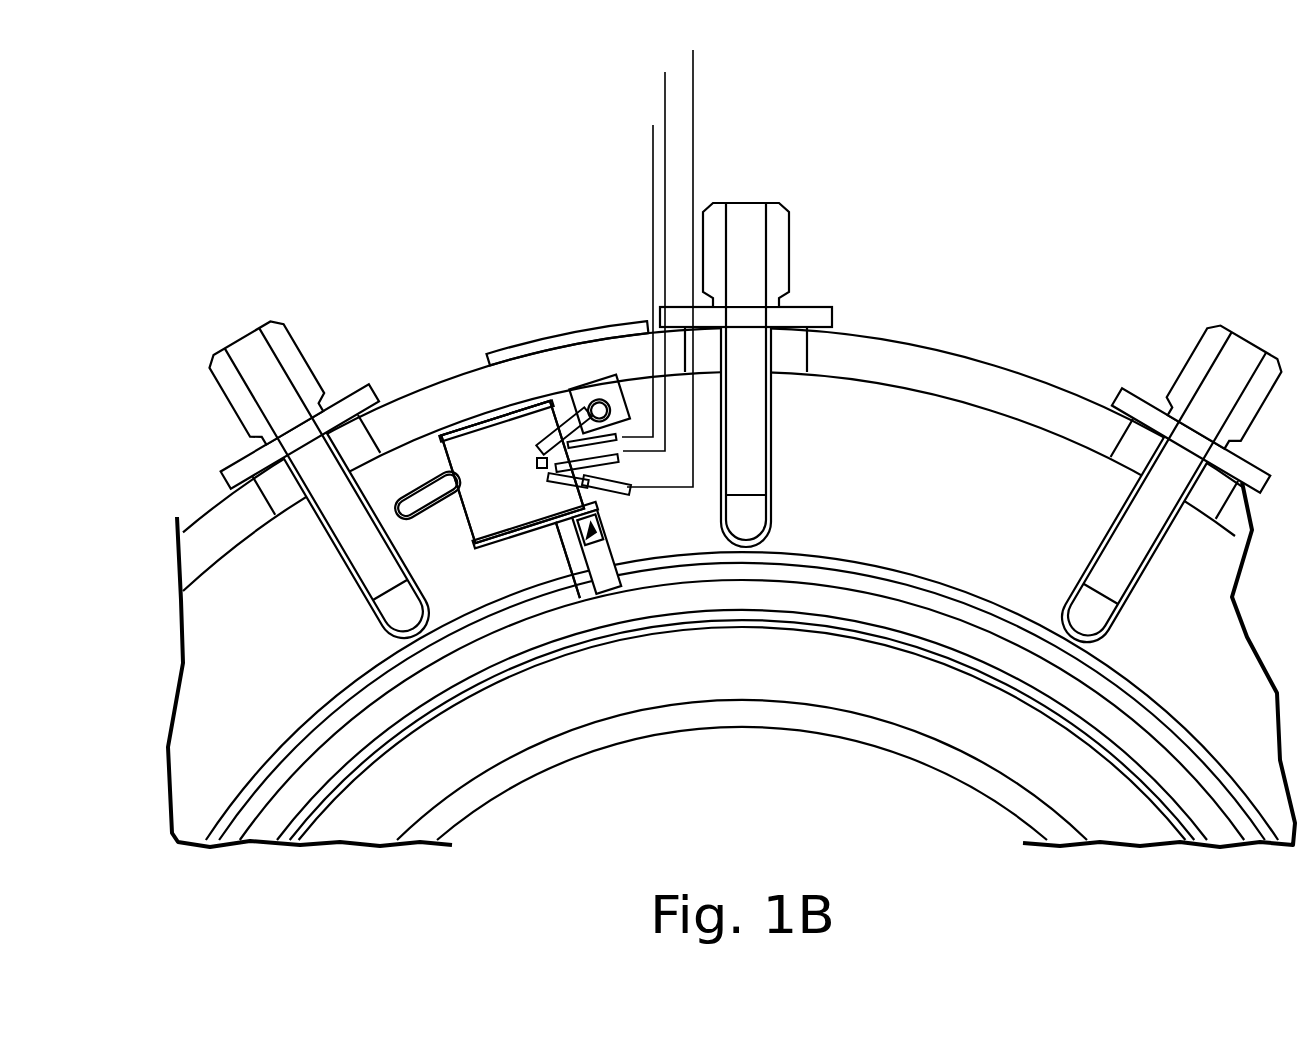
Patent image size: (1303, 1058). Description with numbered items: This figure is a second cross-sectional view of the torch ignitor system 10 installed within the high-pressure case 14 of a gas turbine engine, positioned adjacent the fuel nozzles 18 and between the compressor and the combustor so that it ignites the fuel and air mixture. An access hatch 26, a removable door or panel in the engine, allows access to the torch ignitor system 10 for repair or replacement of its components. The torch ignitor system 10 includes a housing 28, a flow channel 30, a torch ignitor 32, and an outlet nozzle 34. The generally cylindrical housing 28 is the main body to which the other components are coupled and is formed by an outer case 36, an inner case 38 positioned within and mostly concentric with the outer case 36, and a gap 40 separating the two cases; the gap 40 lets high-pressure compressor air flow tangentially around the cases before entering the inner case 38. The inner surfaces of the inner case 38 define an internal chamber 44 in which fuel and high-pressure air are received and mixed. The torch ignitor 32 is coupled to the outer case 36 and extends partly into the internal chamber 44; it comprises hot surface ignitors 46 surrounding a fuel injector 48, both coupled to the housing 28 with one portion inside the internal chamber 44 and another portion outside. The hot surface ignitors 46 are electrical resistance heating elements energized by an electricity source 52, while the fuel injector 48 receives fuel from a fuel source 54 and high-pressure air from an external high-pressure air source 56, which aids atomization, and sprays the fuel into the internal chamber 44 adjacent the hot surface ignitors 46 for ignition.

The torch ignitor system 10 is at (488, 399).
The high-pressure case 14 is at (970, 378).
The fuel nozzle 18 is at (738, 225).
The access hatch 26 is at (512, 345).
The housing 28 is at (522, 547).
The flow channel 30 is at (597, 522).
The torch ignitor 32 is at (626, 422).
The outlet nozzle 34 is at (430, 503).
The outer case 36 is at (560, 520).
The inner case 38 is at (533, 518).
The gap 40 is at (460, 430).
The internal chamber 44 is at (517, 465).
The hot surface ignitors 46 is at (592, 408).
The fuel injector 48 is at (620, 462).
The electricity source 52 is at (693, 50).
The fuel source 54 is at (665, 72).
The external high-pressure air source 56 is at (653, 125).